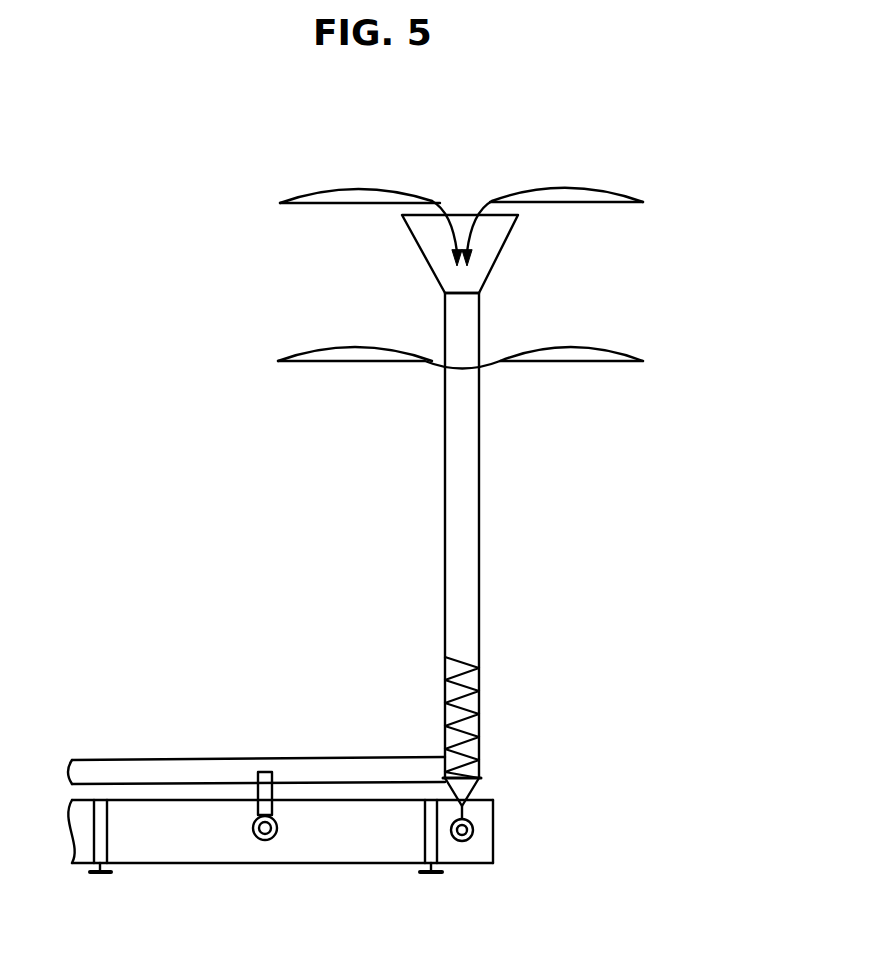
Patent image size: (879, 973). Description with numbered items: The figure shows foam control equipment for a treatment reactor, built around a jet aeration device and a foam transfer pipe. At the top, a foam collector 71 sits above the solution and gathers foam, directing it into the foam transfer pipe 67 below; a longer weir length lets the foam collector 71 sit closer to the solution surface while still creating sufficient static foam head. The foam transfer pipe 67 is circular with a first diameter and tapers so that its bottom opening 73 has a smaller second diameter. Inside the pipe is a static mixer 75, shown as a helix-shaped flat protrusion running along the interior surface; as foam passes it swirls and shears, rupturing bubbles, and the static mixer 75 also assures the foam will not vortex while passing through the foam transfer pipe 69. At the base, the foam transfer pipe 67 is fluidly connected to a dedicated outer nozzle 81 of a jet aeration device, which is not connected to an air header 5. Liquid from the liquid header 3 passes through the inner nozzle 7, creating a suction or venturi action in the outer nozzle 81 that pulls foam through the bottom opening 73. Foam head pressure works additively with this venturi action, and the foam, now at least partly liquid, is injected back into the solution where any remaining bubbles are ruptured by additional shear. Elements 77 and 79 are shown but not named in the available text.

The liquid header 3 is at (205, 863).
The air header 5 is at (178, 758).
The inner nozzle 7 is at (454, 842).
The foam transfer pipe 67 is at (479, 537).
The foam transfer pipe 69 is at (479, 293).
The foam collector 71 is at (508, 243).
The bottom opening 73 is at (466, 812).
The static mixer 75 is at (479, 690).
The upper sheet 77 is at (643, 202).
The lower sheet 79 is at (643, 361).
The outer nozzle 81 is at (493, 827).